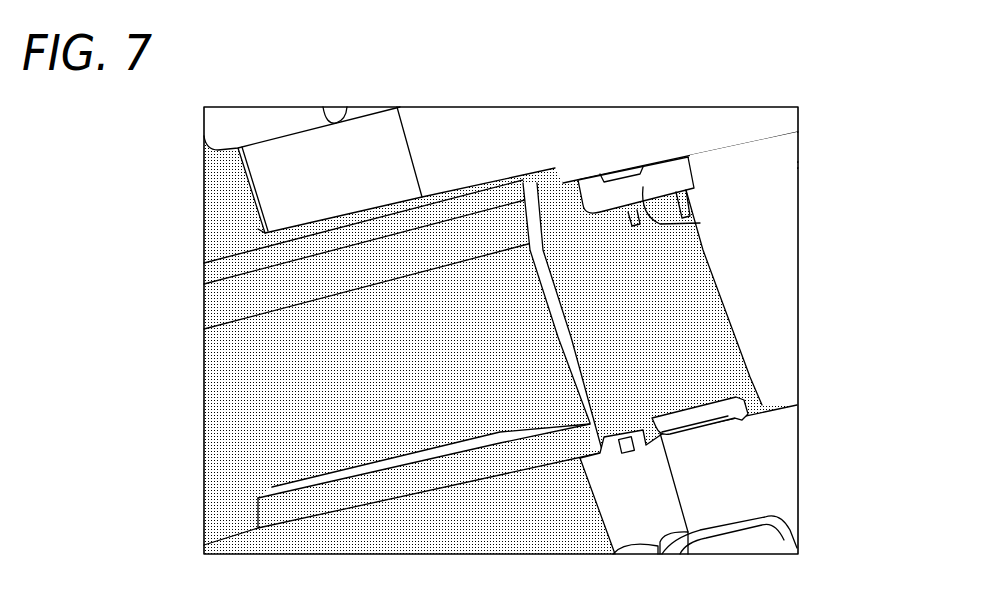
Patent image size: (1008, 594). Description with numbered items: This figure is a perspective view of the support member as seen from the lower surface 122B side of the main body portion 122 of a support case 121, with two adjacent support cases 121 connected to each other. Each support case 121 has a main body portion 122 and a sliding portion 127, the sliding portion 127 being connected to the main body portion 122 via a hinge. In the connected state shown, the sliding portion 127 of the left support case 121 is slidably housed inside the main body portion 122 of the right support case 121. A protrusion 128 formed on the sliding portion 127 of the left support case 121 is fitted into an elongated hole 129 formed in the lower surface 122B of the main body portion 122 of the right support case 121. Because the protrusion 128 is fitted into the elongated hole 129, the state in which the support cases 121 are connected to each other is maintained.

The support case 121 is at (722, 107).
The main body portion 122 is at (752, 248).
The lower surface 122B is at (752, 287).
The sliding portion 127 is at (693, 367).
The protrusion 128 is at (620, 187).
The elongated hole 129 is at (700, 223).